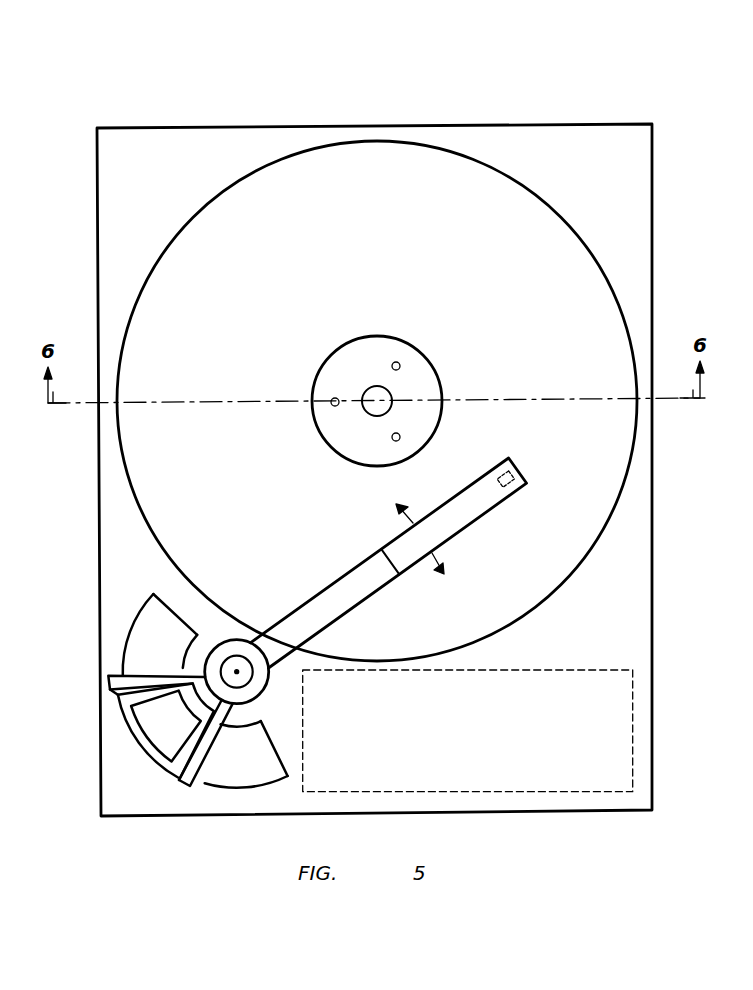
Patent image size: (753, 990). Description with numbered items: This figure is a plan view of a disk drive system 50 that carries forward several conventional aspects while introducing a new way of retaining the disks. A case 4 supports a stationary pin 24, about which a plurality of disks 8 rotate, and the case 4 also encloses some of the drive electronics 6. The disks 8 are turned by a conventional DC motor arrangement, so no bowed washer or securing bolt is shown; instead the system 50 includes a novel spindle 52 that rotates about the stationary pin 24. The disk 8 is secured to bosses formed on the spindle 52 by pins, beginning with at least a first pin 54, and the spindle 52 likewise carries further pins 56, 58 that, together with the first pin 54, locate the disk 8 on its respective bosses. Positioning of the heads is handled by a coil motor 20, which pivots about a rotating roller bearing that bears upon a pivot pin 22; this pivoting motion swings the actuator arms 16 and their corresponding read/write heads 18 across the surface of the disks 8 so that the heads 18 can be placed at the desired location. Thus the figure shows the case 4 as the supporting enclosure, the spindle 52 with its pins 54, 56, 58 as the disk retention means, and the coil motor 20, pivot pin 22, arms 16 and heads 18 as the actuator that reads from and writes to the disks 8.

The case 4 is at (96, 177).
The drive electronics 6 is at (598, 668).
The disks 8 is at (368, 229).
The actuator arms 16 is at (320, 592).
The read/write heads 18 is at (517, 470).
The coil motor 20 is at (140, 576).
The pivot pin 22 is at (247, 680).
The stationary pin 24 is at (375, 387).
The disk drive system 50 is at (561, 83).
The spindle 52 is at (329, 356).
The first pin 54 is at (332, 405).
The pin 56 is at (397, 362).
The pin 58 is at (398, 441).